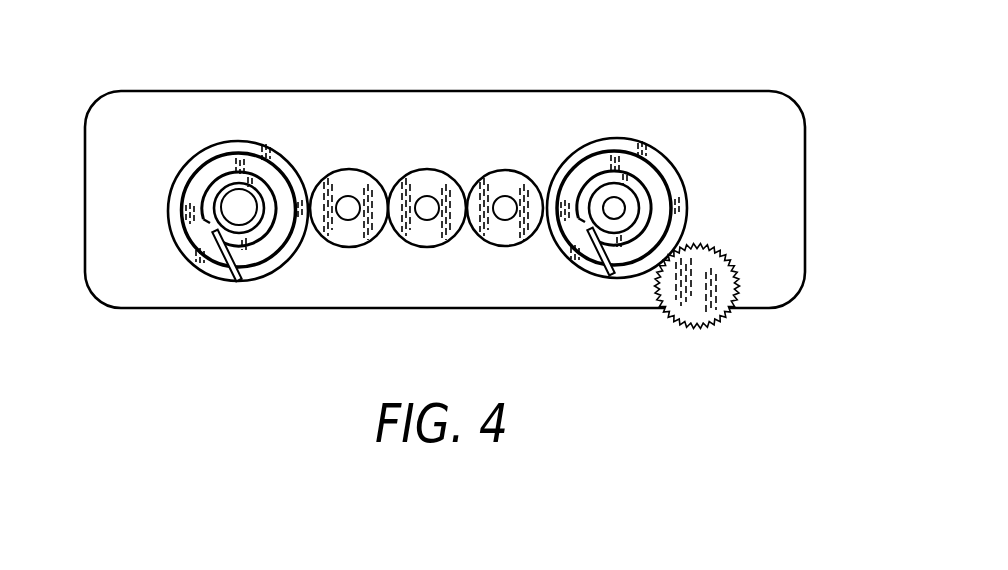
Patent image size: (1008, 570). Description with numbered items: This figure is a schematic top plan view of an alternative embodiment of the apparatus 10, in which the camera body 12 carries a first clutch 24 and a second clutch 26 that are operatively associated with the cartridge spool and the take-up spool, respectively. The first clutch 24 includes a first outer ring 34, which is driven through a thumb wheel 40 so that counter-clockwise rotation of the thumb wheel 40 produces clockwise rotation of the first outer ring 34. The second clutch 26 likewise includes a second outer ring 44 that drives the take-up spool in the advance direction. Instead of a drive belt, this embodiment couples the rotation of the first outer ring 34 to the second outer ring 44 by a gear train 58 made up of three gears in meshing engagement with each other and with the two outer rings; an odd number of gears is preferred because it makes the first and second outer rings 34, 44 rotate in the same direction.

The apparatus 10 is at (473, 191).
The camera body 12 is at (104, 98).
The first clutch 24 is at (642, 162).
The second clutch 26 is at (209, 161).
The first outer ring 34 is at (657, 150).
The thumb wheel 40 is at (703, 328).
The second outer ring 44 is at (176, 178).
The gear train 58 is at (419, 110).